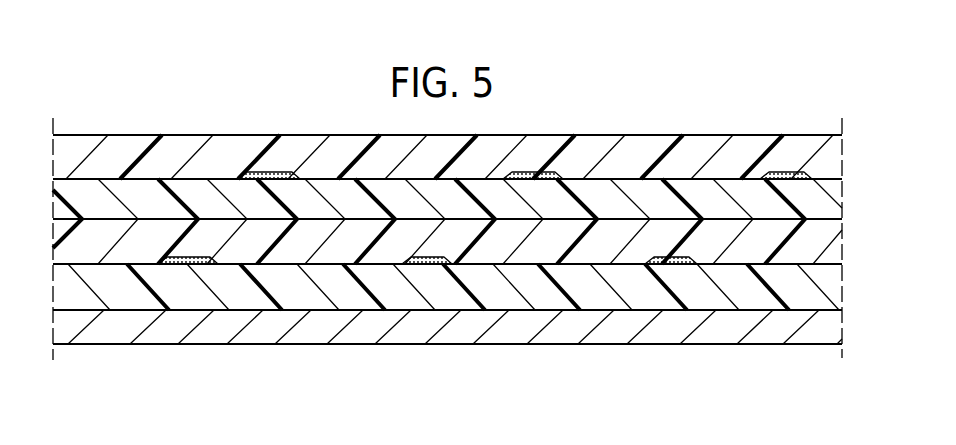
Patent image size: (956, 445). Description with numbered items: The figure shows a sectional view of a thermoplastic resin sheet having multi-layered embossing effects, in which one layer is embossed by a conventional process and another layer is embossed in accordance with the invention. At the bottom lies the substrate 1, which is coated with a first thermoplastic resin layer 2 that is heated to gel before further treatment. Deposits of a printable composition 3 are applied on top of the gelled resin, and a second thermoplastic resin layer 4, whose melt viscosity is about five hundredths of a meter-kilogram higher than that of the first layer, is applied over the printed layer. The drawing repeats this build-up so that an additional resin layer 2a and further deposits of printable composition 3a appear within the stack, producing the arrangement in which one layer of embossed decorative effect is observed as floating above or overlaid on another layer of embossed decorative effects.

The substrate 1 is at (733, 344).
The first thermoplastic resin layer 2 is at (818, 198).
The second intermediate layer 2a is at (830, 285).
The printable composition 3 is at (806, 171).
The lower conductive particle 3a is at (663, 264).
The second thermoplastic resin layer 4 is at (758, 143).